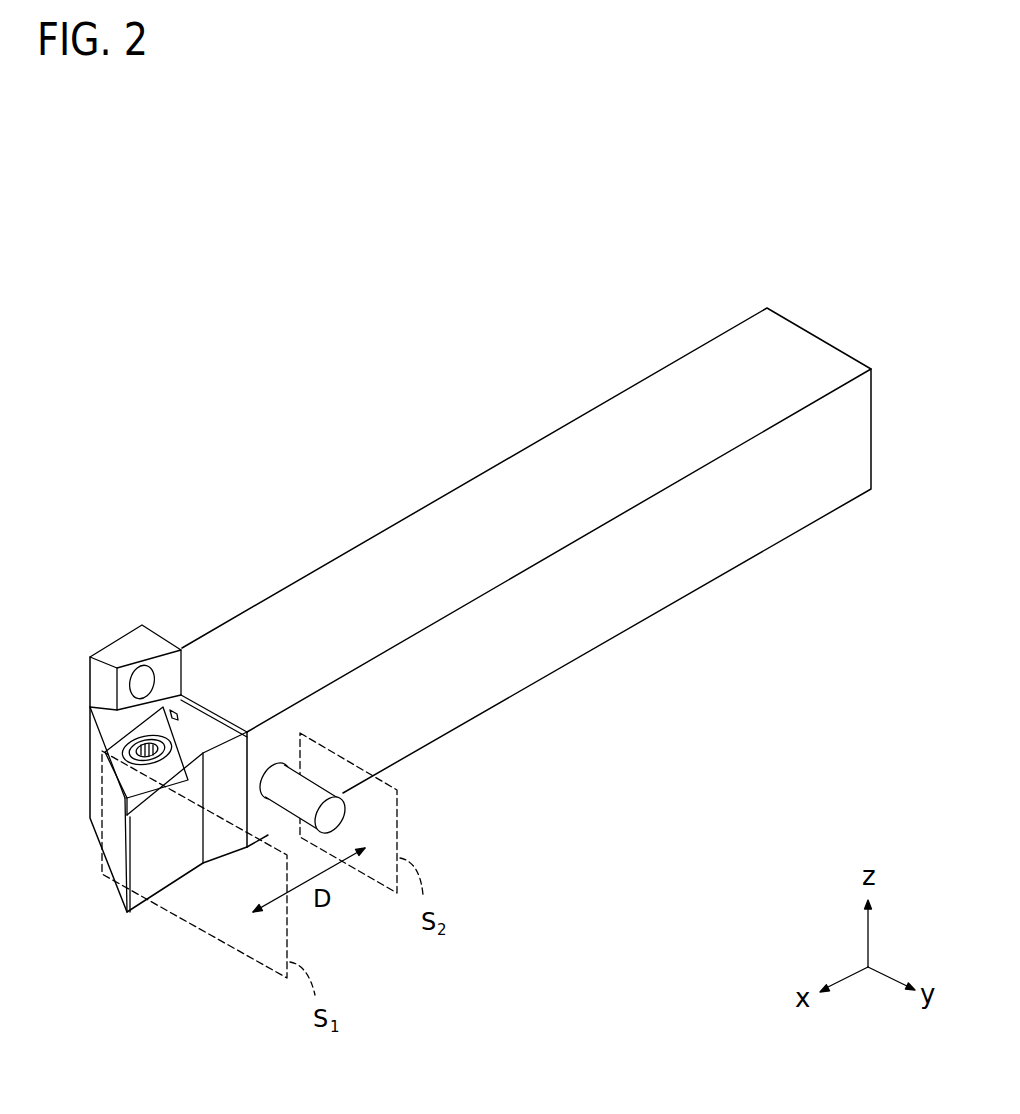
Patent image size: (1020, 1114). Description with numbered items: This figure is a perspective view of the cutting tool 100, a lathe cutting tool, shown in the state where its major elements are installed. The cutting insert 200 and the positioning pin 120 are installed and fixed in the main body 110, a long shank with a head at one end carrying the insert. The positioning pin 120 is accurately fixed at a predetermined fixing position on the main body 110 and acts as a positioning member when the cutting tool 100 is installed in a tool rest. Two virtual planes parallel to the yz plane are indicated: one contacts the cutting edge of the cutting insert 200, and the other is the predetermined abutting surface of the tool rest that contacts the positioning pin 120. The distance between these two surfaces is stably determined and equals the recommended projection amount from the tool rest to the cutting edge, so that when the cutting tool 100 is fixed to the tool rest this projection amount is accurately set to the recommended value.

The cutting tool 100 is at (444, 643).
The main body 110 is at (467, 498).
The positioning pin 120 is at (312, 785).
The cutting insert 200 is at (143, 730).